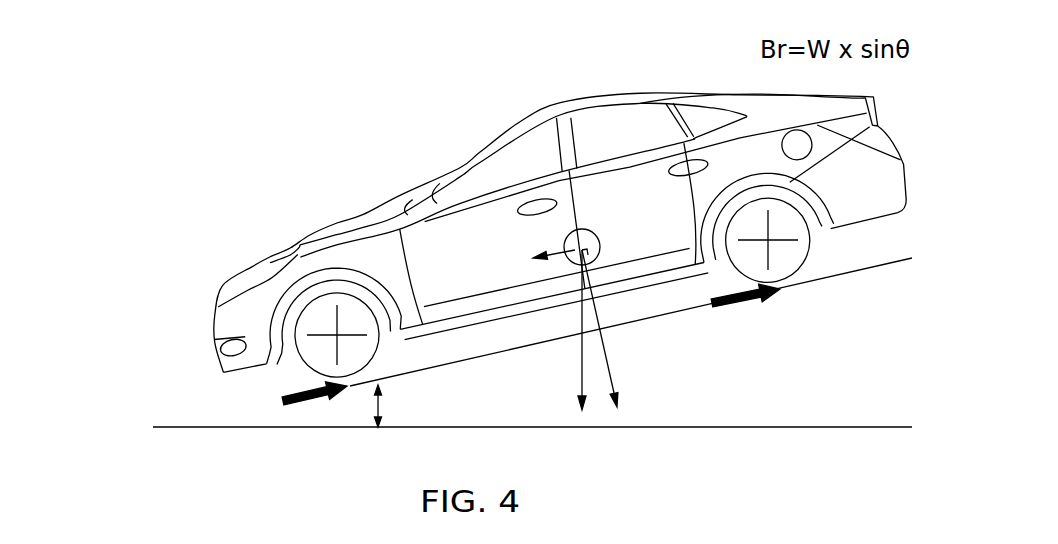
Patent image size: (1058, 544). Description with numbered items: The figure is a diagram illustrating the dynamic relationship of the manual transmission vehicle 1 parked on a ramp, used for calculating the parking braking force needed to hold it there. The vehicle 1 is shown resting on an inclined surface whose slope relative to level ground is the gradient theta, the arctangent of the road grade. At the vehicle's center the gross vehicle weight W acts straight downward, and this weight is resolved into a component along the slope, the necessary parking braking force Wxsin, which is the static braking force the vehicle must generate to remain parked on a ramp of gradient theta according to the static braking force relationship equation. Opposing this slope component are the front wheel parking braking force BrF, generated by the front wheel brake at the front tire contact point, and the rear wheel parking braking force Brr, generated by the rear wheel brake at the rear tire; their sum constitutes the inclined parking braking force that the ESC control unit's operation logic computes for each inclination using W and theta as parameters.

The manual transmission vehicle 1 is at (603, 96).
The gross vehicle weight W is at (583, 323).
The necessary parking braking force Wxsin is at (598, 232).
The gradient theta is at (389, 406).
The front wheel parking braking force BrF is at (188, 391).
The rear wheel parking braking force Brr is at (793, 328).